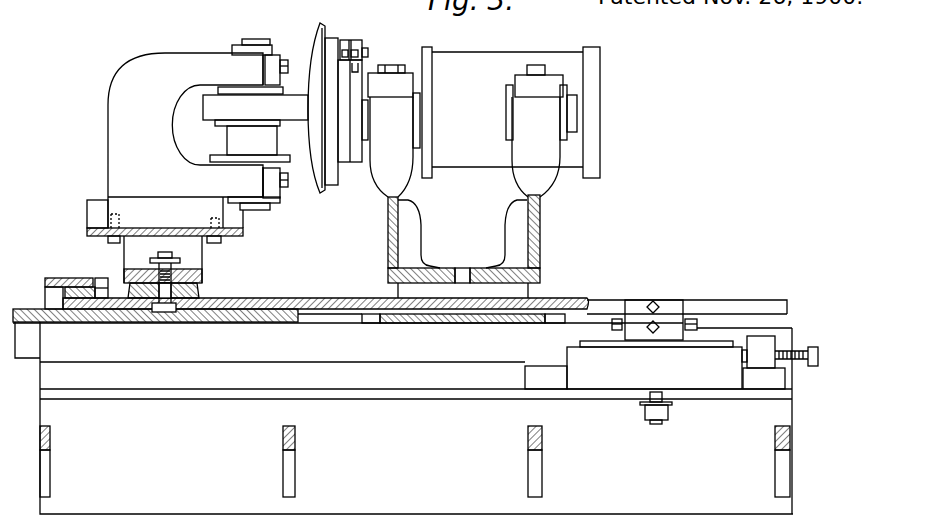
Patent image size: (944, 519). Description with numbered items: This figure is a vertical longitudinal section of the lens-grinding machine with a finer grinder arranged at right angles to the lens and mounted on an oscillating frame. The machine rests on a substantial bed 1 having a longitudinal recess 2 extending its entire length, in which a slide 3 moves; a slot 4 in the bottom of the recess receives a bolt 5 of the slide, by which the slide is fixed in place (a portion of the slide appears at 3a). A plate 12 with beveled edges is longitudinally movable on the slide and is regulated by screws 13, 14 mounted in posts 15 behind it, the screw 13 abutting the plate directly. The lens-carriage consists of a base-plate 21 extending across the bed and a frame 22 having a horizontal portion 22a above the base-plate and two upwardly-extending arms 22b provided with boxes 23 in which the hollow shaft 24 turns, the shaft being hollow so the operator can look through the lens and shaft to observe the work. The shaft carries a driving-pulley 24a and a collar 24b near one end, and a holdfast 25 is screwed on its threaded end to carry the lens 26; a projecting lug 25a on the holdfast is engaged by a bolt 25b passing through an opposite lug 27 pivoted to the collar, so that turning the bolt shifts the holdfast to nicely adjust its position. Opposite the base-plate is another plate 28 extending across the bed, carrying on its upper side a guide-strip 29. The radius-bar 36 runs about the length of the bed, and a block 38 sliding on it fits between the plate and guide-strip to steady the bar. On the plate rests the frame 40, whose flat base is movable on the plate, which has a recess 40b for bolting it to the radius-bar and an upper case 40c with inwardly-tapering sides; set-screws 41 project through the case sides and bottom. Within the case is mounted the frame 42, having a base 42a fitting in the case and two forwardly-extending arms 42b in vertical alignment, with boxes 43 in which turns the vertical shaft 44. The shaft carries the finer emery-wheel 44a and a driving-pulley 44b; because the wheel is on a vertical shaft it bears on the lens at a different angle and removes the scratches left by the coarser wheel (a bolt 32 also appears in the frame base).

The bed 1 is at (404, 418).
The longitudinal recess 2 is at (402, 341).
The slide 3 is at (633, 368).
The plate on block 3a is at (656, 352).
The slot 4 is at (478, 396).
The bolt 5 is at (657, 424).
The plate 12 is at (693, 347).
The screw 13 is at (800, 350).
The screw 14 is at (668, 304).
The posts 15 is at (764, 362).
The base-plate 21 is at (453, 320).
The frame 22 is at (543, 262).
The horizontal portion 22a is at (478, 268).
The upwardly-extending arms 22b is at (388, 240).
The boxes 23 is at (568, 73).
The hollow shaft 24 is at (578, 121).
The driving-pulley 24a is at (474, 160).
The collar 24b is at (358, 165).
The holdfast 25 is at (344, 160).
The projecting lug 25a is at (345, 45).
The bolt 25b is at (368, 53).
The lens 26 is at (325, 37).
The lug 27 is at (358, 47).
The plate 28 is at (253, 321).
The guide-strip 29 is at (75, 268).
The bolt 32 is at (162, 258).
The radius-bar 36 is at (327, 300).
The block 38 is at (98, 280).
The frame 40 is at (203, 275).
The recess 40b is at (165, 275).
The upper case 40c is at (97, 210).
The set-screws 41 is at (118, 220).
The frame 42 is at (185, 125).
The base 42a is at (175, 211).
The forwardly-extending arms 42b is at (236, 126).
The boxes 43 is at (276, 58).
The vertical shaft 44 is at (258, 42).
The emery-wheel 44a is at (255, 110).
The driving-pulley 44b is at (250, 144).